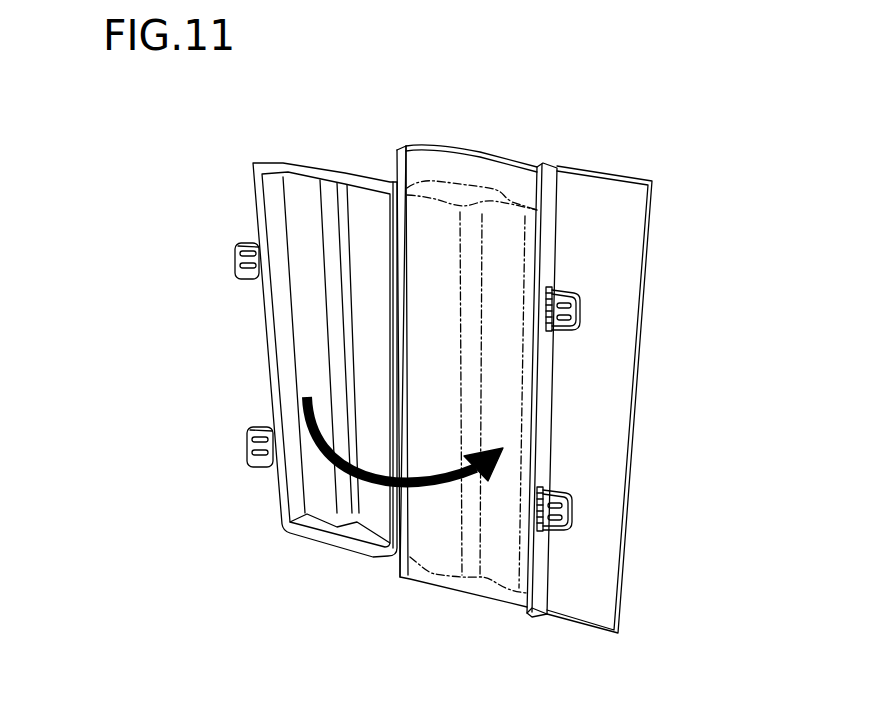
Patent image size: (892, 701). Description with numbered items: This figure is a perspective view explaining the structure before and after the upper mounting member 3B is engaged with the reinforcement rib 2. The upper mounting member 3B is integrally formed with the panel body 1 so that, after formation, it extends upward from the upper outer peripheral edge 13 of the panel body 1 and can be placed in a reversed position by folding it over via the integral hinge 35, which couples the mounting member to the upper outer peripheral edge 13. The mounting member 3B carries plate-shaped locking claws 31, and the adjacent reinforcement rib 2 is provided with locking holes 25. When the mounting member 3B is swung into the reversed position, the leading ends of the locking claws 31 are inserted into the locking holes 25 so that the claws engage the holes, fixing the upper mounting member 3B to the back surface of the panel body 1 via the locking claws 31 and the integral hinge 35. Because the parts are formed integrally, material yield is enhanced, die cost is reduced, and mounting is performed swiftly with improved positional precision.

The panel body 1 is at (602, 208).
The reinforcement rib 2 is at (537, 240).
The upper mounting member 3B is at (310, 162).
The upper outer peripheral edge 13 is at (427, 163).
The locking hole 25 is at (564, 328).
The locking claw 31 is at (235, 253).
The integral hinge 35 is at (395, 272).